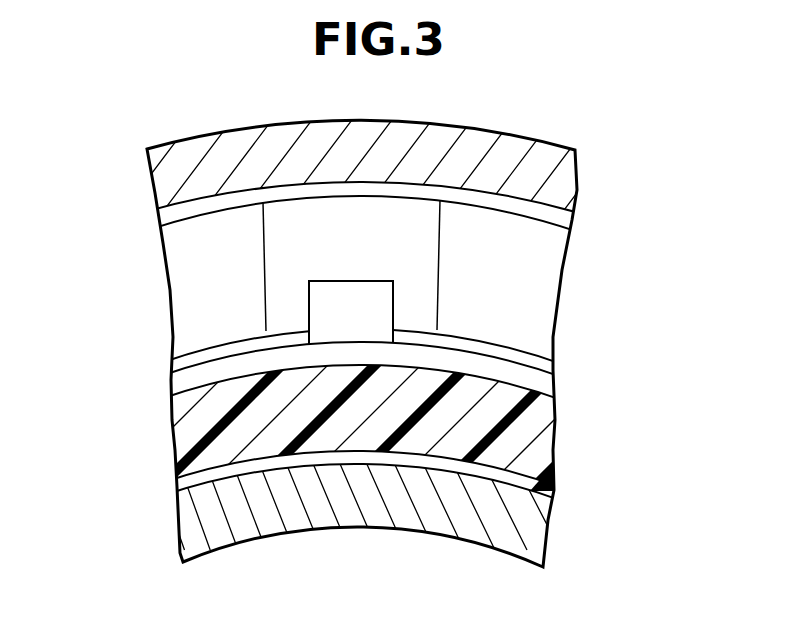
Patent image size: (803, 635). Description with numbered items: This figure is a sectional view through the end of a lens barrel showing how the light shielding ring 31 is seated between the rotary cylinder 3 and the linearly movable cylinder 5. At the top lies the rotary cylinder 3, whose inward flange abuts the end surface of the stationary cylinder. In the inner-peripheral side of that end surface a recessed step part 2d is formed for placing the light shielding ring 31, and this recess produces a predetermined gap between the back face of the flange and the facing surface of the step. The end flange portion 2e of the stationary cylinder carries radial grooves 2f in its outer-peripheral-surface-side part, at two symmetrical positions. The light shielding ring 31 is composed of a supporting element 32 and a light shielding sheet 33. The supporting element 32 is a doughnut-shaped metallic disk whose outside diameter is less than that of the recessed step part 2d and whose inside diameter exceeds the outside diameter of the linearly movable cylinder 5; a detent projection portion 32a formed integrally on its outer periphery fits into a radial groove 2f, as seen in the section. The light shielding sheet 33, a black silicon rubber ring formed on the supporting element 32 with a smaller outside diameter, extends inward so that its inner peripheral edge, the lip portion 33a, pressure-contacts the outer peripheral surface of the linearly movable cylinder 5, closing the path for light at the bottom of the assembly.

The rotary cylinder 3 is at (547, 177).
The recessed step part 2d is at (527, 362).
The end flange portion 2e is at (538, 310).
The radial groove 2f is at (415, 270).
The light shielding ring 31 is at (158, 417).
The supporting element 32 is at (530, 382).
The detent projection portion 32a is at (330, 313).
The light shielding sheet 33 is at (530, 440).
The lip portion 33a is at (527, 487).
The linearly movable cylinder 5 is at (530, 527).